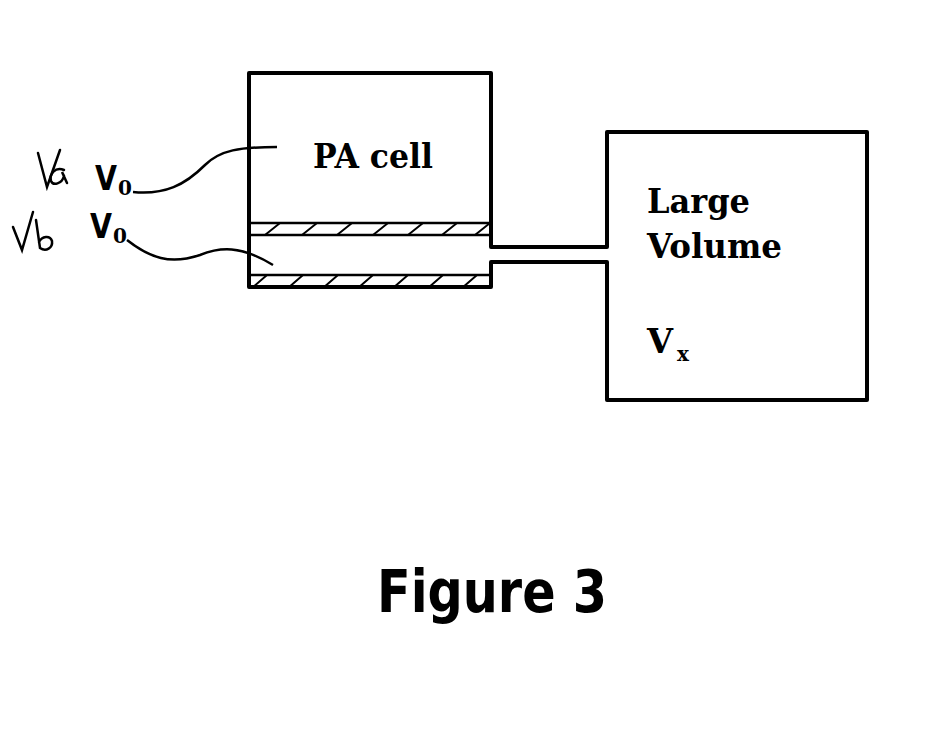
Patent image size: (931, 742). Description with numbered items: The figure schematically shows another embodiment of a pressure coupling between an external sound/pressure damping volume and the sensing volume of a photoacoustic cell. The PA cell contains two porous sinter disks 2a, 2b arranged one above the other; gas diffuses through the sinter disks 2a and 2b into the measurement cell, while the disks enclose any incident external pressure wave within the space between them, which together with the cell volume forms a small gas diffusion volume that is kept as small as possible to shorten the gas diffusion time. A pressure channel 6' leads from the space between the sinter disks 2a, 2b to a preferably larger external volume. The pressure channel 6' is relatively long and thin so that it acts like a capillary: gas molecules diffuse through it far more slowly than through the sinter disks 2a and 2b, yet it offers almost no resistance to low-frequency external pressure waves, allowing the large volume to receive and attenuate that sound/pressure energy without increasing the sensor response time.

The sinter disk 2a is at (412, 288).
The sinter disk 2b is at (355, 236).
The pressure channel 6' is at (549, 146).